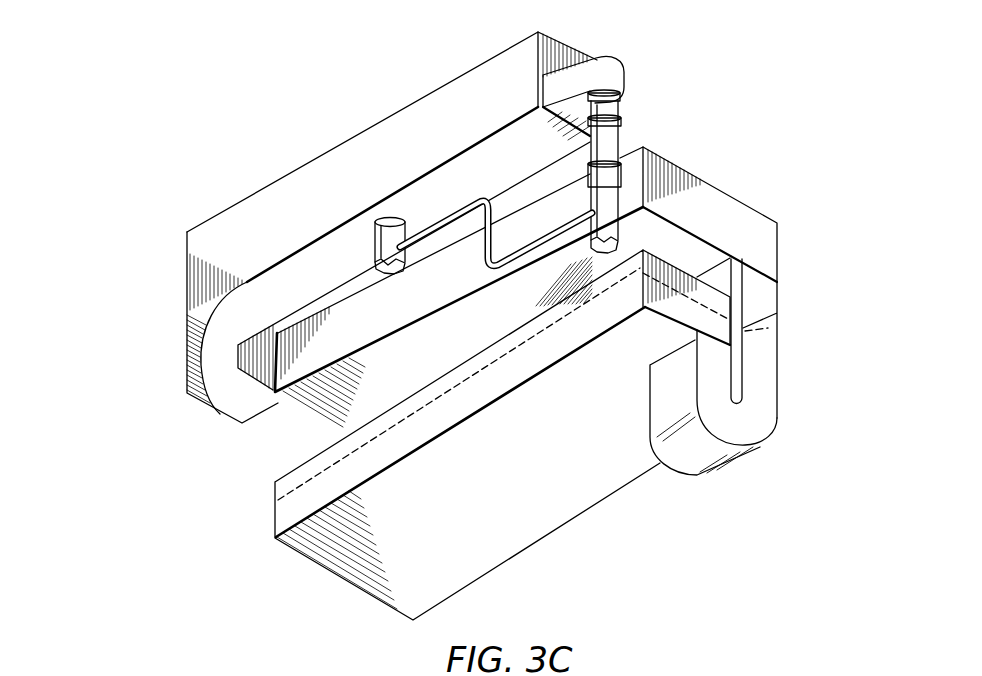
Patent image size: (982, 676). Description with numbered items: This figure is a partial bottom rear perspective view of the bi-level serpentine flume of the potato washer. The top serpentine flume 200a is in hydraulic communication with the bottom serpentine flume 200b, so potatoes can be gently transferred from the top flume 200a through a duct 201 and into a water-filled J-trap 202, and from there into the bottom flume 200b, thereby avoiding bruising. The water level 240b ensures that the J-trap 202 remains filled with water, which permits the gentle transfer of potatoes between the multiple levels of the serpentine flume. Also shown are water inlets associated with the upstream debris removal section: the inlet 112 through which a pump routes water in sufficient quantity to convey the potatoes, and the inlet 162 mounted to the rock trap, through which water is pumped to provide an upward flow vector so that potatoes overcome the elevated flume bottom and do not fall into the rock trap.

The inlet 112 is at (606, 68).
The inlet 162 is at (477, 258).
The top serpentine flume 200a is at (723, 205).
The bottom serpentine flume 200b is at (613, 484).
The duct 201 is at (760, 306).
The J-trap 202 is at (776, 408).
The water level 240b is at (770, 330).